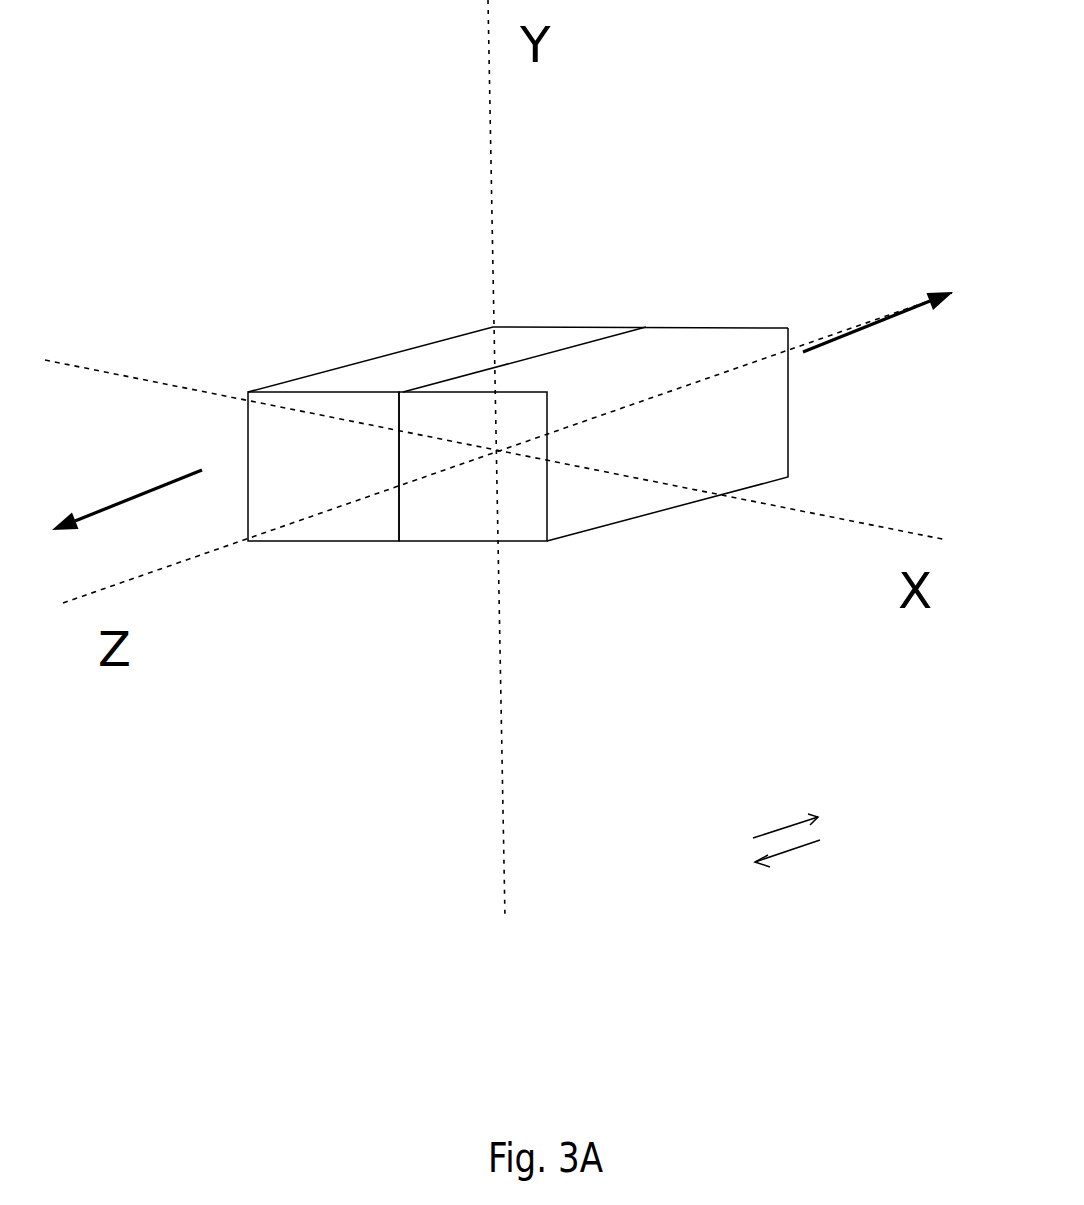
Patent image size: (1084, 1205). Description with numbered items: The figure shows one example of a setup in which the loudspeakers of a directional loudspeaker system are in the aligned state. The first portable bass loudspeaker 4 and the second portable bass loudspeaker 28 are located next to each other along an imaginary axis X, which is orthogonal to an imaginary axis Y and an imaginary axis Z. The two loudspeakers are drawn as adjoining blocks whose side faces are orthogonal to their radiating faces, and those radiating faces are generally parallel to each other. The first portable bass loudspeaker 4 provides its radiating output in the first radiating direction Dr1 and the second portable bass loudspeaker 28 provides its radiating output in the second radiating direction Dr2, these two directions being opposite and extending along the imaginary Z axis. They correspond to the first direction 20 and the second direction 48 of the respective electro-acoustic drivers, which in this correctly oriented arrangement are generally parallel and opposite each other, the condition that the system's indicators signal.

The first portable bass loudspeaker 4 is at (530, 426).
The first direction 20 is at (127, 511).
The second portable bass loudspeaker 28 is at (712, 463).
The second direction 48 is at (878, 335).
The direction DR1 Dr1 is at (763, 859).
The direction DR2 Dr2 is at (810, 819).